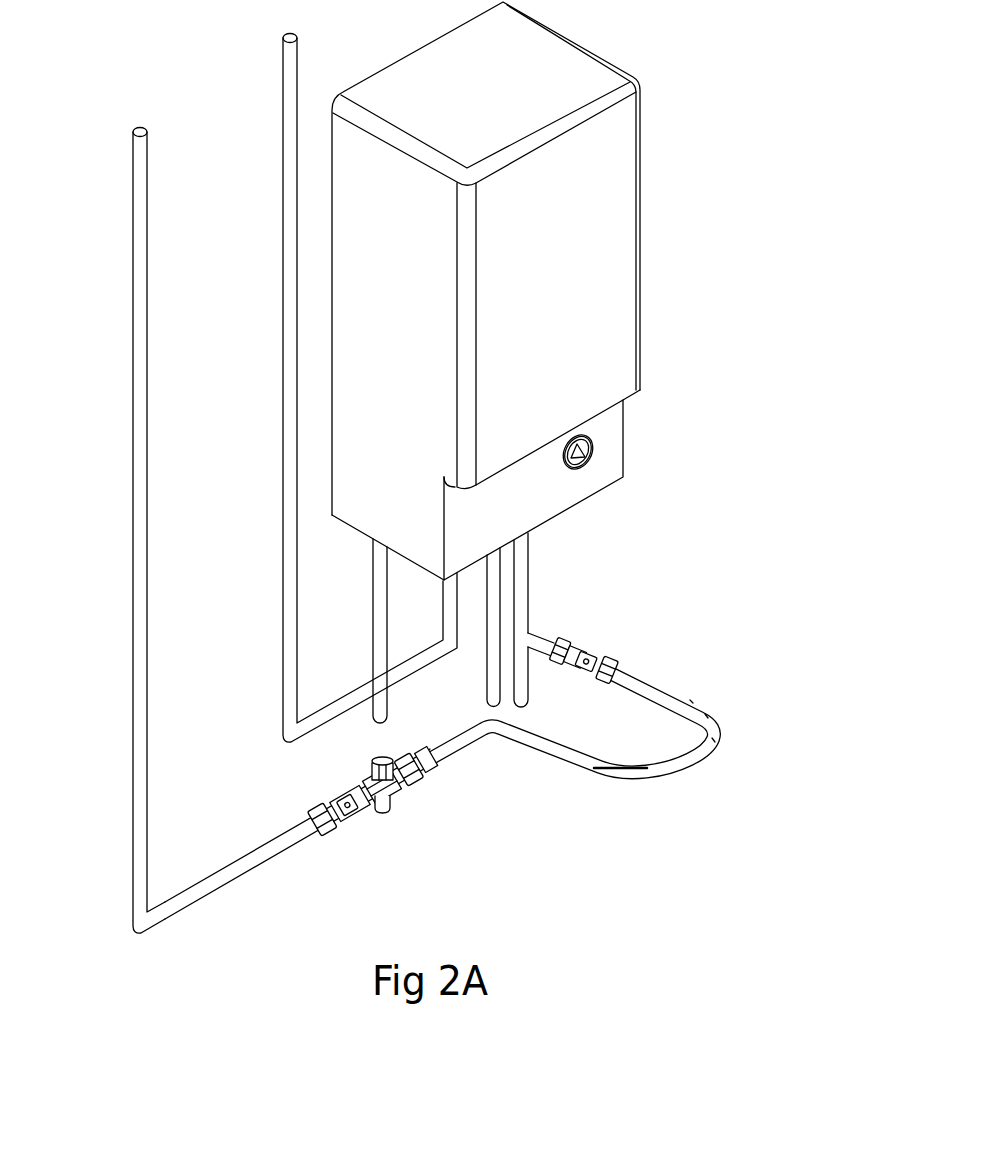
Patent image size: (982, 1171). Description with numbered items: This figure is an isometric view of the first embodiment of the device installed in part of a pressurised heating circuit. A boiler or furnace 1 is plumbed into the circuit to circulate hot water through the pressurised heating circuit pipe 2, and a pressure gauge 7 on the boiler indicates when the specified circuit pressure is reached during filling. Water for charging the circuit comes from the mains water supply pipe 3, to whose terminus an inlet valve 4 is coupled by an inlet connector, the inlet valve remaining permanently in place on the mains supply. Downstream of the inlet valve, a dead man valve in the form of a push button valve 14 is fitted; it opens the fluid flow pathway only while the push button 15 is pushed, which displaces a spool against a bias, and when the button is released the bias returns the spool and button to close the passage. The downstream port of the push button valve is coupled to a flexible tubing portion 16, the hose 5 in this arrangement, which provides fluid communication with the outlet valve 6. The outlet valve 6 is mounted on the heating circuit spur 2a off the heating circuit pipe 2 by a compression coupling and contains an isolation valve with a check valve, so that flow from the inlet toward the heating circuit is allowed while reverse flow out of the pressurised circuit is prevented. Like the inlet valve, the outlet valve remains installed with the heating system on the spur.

The boiler or furnace 1 is at (545, 291).
The heating circuit pipe 2 is at (527, 585).
The heating circuit spur 2a is at (519, 647).
The mains water supply pipe 3 is at (135, 843).
The inlet valve 4 is at (327, 822).
The hose 5 is at (622, 777).
The outlet valve 6 is at (577, 642).
The pressure gauge 7 is at (595, 441).
The push button valve 14 is at (393, 797).
The push button 15 is at (381, 812).
The flexible tubing portion 16 is at (662, 772).